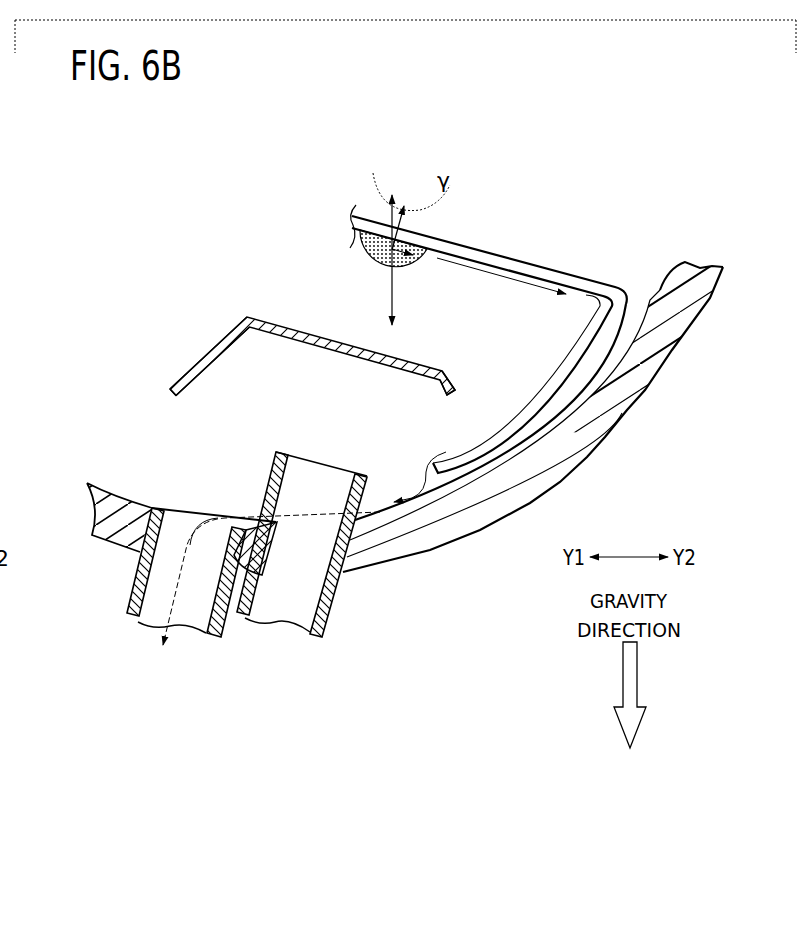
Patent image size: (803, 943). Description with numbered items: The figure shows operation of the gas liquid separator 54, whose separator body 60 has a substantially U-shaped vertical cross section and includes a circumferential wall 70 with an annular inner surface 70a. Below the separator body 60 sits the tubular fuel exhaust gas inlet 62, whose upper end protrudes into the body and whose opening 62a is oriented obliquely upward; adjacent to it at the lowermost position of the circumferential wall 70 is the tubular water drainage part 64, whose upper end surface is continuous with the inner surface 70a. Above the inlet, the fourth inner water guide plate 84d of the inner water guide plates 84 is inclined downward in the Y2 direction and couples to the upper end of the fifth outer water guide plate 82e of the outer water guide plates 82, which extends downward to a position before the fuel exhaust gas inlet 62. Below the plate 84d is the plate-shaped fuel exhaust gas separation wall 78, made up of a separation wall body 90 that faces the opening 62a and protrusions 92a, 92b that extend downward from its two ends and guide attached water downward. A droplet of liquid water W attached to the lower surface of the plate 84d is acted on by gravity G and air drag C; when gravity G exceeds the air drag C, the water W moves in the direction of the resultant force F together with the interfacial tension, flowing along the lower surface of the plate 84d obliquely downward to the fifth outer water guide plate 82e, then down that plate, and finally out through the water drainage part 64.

The gas liquid separator 54 is at (558, 377).
The separator body 60 is at (718, 295).
The fuel exhaust gas inlet 62 is at (308, 523).
The opening 62a is at (302, 452).
The water drainage part 64 is at (133, 590).
The circumferential wall 70 is at (558, 402).
The inner surface 70a is at (660, 292).
The fuel exhaust gas separation wall 78 is at (457, 376).
The outer water guide plate 82 is at (534, 423).
The fifth outer water guide plate 82e is at (596, 362).
The inner water guide plate 84 is at (488, 353).
The fourth inner water guide plate 84d is at (531, 265).
The separation wall body 90 is at (333, 374).
The protrusion 92a is at (203, 362).
The protrusion 92b is at (455, 391).
The liquid water W is at (370, 257).
The gravity G is at (387, 296).
The resultant force F is at (405, 268).
The air drag C is at (409, 199).